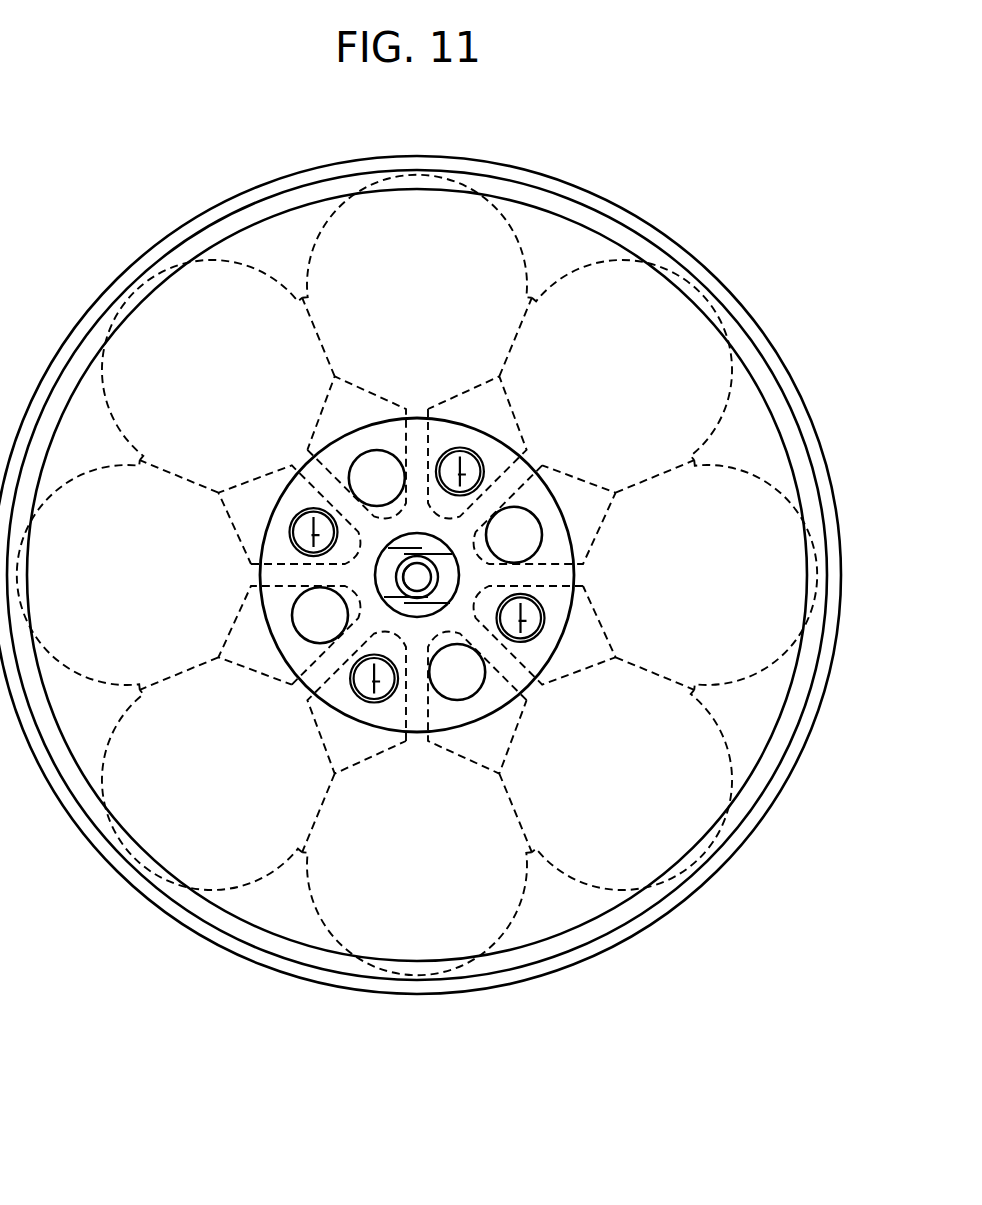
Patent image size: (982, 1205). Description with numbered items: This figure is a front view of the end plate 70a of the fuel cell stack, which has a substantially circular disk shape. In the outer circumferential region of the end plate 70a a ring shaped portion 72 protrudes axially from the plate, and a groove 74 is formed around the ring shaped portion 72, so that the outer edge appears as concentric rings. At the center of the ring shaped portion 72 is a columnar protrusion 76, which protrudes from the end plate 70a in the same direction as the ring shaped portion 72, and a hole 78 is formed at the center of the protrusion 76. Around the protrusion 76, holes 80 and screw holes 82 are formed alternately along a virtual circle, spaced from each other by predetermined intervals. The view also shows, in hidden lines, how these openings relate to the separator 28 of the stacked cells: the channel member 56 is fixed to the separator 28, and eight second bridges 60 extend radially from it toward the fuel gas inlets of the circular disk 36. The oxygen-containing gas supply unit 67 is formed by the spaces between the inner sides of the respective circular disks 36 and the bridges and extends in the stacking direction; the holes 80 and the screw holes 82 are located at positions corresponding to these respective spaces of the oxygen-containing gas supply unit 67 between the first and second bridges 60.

The separator 28 is at (446, 575).
The circular disk 36 is at (798, 566).
The channel member 56 is at (440, 510).
The second bridges 60 is at (557, 504).
The oxygen-containing gas supply unit 67 is at (549, 471).
The end plate 70a is at (688, 208).
The ring shaped portion 72 is at (181, 258).
The groove 74 is at (133, 278).
The columnar protrusion 76 is at (447, 591).
The hole 78 is at (396, 598).
The holes 80 is at (467, 699).
The screw holes 82 is at (368, 702).